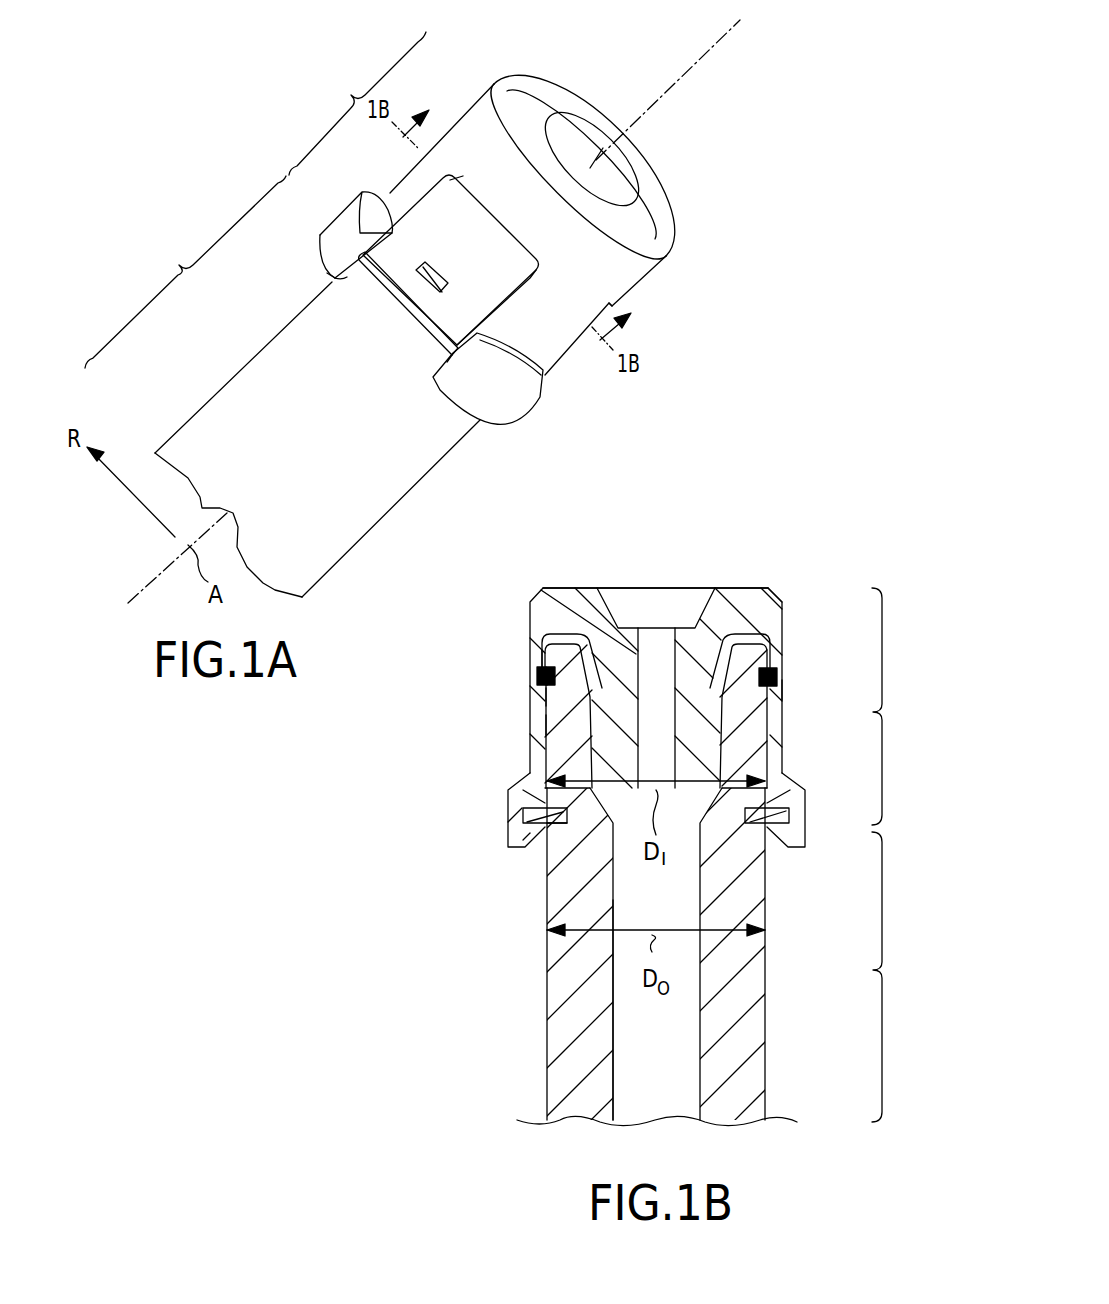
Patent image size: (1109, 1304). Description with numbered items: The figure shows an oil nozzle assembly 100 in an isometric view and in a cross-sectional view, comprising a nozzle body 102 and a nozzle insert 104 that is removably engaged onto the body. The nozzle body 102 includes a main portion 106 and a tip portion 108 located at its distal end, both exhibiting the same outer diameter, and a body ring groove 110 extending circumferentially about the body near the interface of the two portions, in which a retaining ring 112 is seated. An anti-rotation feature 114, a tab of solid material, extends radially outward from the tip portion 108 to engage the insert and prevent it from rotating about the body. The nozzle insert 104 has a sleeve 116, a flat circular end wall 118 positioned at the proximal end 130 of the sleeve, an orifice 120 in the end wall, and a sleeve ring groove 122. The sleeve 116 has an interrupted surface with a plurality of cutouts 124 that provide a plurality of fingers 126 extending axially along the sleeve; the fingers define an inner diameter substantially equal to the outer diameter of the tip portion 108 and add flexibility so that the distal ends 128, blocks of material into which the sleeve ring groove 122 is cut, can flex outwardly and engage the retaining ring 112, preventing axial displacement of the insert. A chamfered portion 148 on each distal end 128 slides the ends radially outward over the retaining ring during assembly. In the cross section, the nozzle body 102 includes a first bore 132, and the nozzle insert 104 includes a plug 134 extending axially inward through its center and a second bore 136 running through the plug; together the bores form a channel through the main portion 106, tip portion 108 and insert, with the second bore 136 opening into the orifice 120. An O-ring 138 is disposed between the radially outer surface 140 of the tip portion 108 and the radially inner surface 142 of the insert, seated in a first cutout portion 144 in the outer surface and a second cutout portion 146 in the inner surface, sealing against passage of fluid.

In FIG. 1A, the oil nozzle assembly 100 is at (156, 90).
In FIG. 1B, the oil nozzle assembly 100 is at (828, 468).
In FIG. 1A, the nozzle body 102 is at (313, 557).
In FIG. 1B, the nozzle body 102 is at (752, 980).
In FIG. 1A, the nozzle insert 104 is at (637, 268).
In FIG. 1B, the nozzle insert 104 is at (777, 617).
In FIG. 1A, the main portion 106 is at (185, 272).
In FIG. 1B, the main portion 106 is at (902, 977).
In FIG. 1A, the tip portion 108 is at (357, 103).
In FIG. 1B, the tip portion 108 is at (902, 706).
In FIG. 1B, the body ring groove 110 is at (557, 823).
In FIG. 1A, the retaining ring 112 is at (390, 300).
In FIG. 1B, the retaining ring 112 is at (540, 813).
In FIG. 1A, the anti-rotation feature 114 is at (432, 270).
In FIG. 1A, the sleeve 116 is at (410, 178).
In FIG. 1B, the sleeve 116 is at (512, 830).
In FIG. 1A, the end wall 118 is at (650, 215).
In FIG. 1B, the end wall 118 is at (738, 588).
In FIG. 1A, the orifice 120 is at (612, 185).
In FIG. 1B, the orifice 120 is at (620, 590).
In FIG. 1B, the sleeve ring groove 122 is at (523, 840).
In FIG. 1A, the cutouts 124 is at (493, 313).
In FIG. 1A, the fingers 126 is at (552, 328).
In FIG. 1B, the fingers 126 is at (775, 693).
In FIG. 1A, the distal ends 128 is at (517, 407).
In FIG. 1B, the distal ends 128 is at (797, 832).
In FIG. 1A, the proximal end 130 is at (648, 225).
In FIG. 1B, the proximal end 130 is at (757, 586).
In FIG. 1B, the first bore 132 is at (675, 1052).
In FIG. 1B, the plug 134 is at (703, 705).
In FIG. 1B, the second bore 136 is at (667, 758).
In FIG. 1B, the O-ring 138 is at (533, 675).
In FIG. 1B, the radially outer surface 140 is at (543, 703).
In FIG. 1B, the radially inner surface 142 is at (543, 733).
In FIG. 1B, the first cutout portion 144 is at (557, 660).
In FIG. 1B, the second cutout portion 146 is at (537, 670).
In FIG. 1A, the chamfered portion 148 is at (335, 278).
In FIG. 1B, the chamfered portion 148 is at (788, 848).